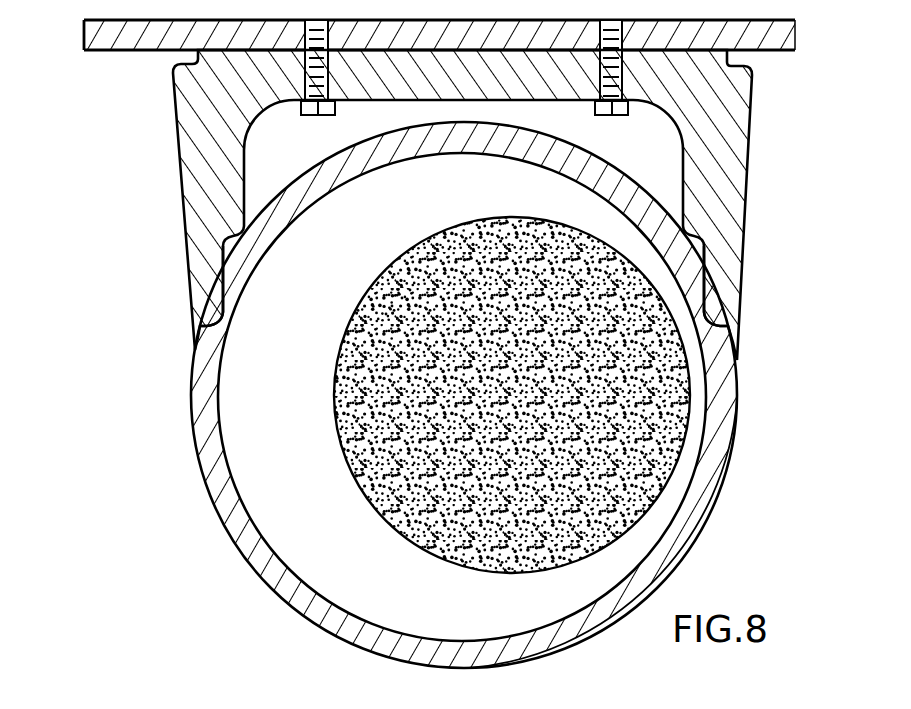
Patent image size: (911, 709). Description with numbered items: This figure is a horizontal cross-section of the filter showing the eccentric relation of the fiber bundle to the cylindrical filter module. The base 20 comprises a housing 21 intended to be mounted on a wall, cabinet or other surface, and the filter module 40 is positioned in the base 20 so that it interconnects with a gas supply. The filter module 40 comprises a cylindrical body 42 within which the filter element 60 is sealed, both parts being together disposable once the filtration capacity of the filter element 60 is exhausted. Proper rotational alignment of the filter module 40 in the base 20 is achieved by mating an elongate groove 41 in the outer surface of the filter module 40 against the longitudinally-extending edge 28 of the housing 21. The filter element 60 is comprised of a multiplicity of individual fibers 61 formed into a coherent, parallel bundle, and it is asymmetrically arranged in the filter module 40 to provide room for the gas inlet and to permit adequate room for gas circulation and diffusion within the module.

The base 20 is at (119, 195).
The housing 21 is at (188, 127).
The longitudinally-extending edge 28 is at (195, 322).
The filter module 40 is at (179, 426).
The elongate groove 41 is at (206, 292).
The cylindrical body 42 is at (244, 545).
The filter element 60 is at (348, 333).
The fibers 61 is at (409, 288).